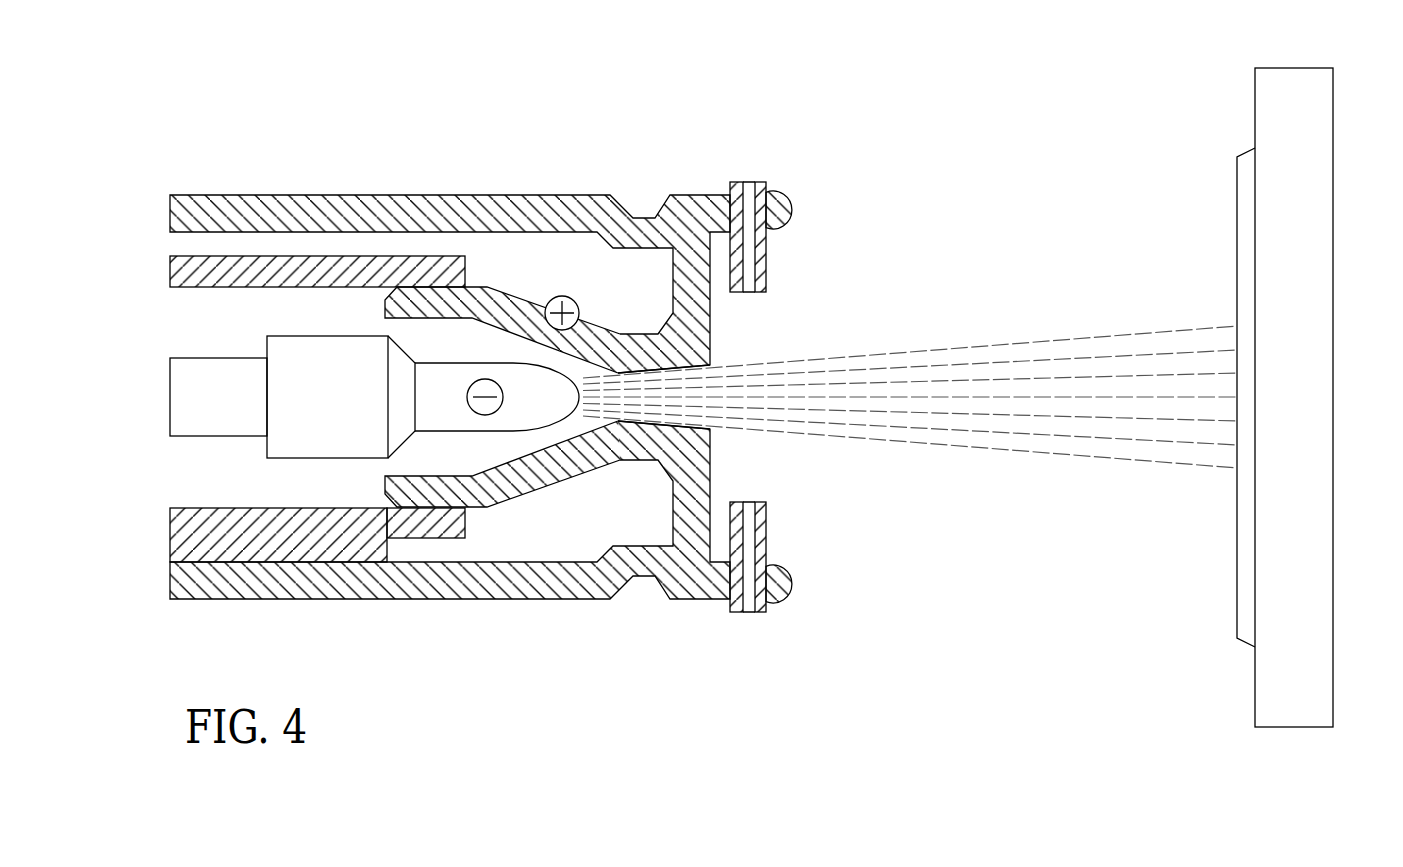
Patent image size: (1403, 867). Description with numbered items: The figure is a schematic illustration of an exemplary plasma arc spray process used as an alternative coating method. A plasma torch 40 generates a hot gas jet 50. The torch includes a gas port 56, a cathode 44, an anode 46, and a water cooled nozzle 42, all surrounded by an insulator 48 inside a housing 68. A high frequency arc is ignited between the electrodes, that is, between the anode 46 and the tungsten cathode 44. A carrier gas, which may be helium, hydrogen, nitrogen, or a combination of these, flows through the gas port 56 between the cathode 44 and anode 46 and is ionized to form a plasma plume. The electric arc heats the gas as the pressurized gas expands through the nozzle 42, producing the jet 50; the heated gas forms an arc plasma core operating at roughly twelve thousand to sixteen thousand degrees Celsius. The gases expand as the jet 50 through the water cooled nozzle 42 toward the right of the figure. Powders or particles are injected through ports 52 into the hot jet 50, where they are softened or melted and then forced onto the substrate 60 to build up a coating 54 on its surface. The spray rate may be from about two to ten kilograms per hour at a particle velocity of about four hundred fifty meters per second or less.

The plasma torch 40 is at (1037, 90).
The water cooled nozzle 42 is at (618, 373).
The cathode 44 is at (303, 460).
The anode 46 is at (581, 317).
The insulator 48 is at (265, 548).
The hot gas jet 50 is at (1060, 466).
The ports 52 is at (747, 182).
The coating 54 is at (1237, 263).
The gas port 56 is at (213, 358).
The substrate 60 is at (1255, 695).
The housing 68 is at (258, 194).